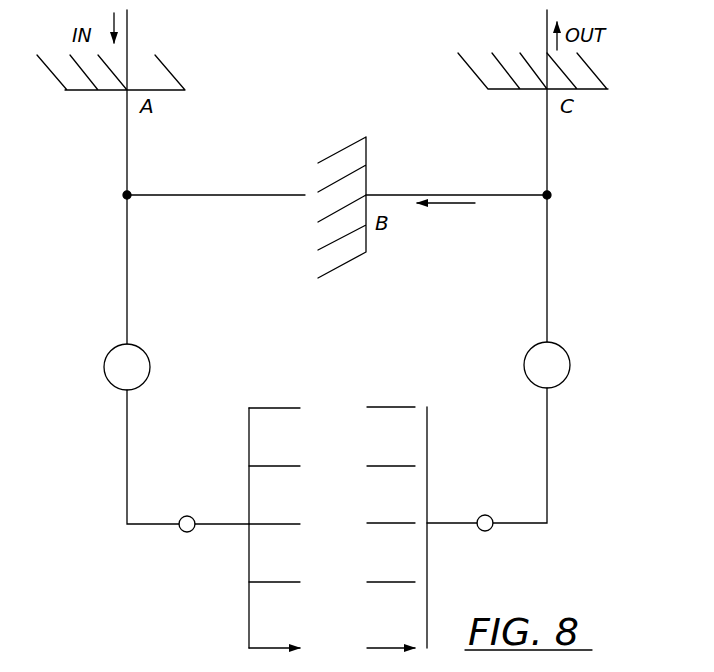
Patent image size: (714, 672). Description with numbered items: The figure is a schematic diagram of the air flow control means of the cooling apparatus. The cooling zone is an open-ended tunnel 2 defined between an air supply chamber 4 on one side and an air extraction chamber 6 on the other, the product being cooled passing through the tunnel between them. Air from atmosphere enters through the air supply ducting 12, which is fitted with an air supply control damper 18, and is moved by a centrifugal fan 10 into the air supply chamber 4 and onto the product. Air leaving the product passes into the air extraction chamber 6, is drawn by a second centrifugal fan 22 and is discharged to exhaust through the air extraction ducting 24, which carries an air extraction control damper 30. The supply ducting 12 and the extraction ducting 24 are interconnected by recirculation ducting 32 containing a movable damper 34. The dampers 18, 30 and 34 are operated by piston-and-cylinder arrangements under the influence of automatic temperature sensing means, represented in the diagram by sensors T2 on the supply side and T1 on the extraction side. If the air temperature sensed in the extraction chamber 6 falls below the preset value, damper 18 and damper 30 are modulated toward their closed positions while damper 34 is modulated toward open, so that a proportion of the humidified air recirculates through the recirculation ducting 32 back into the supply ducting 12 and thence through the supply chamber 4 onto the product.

The air supply control damper 18 is at (90, 92).
The air extraction control damper 30 is at (522, 92).
The air supply ducting 12 is at (126, 172).
The recirculation ducting 32 is at (235, 196).
The movable damper 34 is at (368, 172).
The air extraction ducting 24 is at (548, 152).
The centrifugal fan 10 is at (113, 349).
The centrifugal fan 22 is at (561, 349).
The open-ended tunnel 2 is at (327, 503).
The air supply chamber 4 is at (249, 562).
The air extraction chamber 6 is at (428, 566).
The outlet temperature sensor T1 is at (485, 515).
The inlet temperature sensor T2 is at (187, 516).